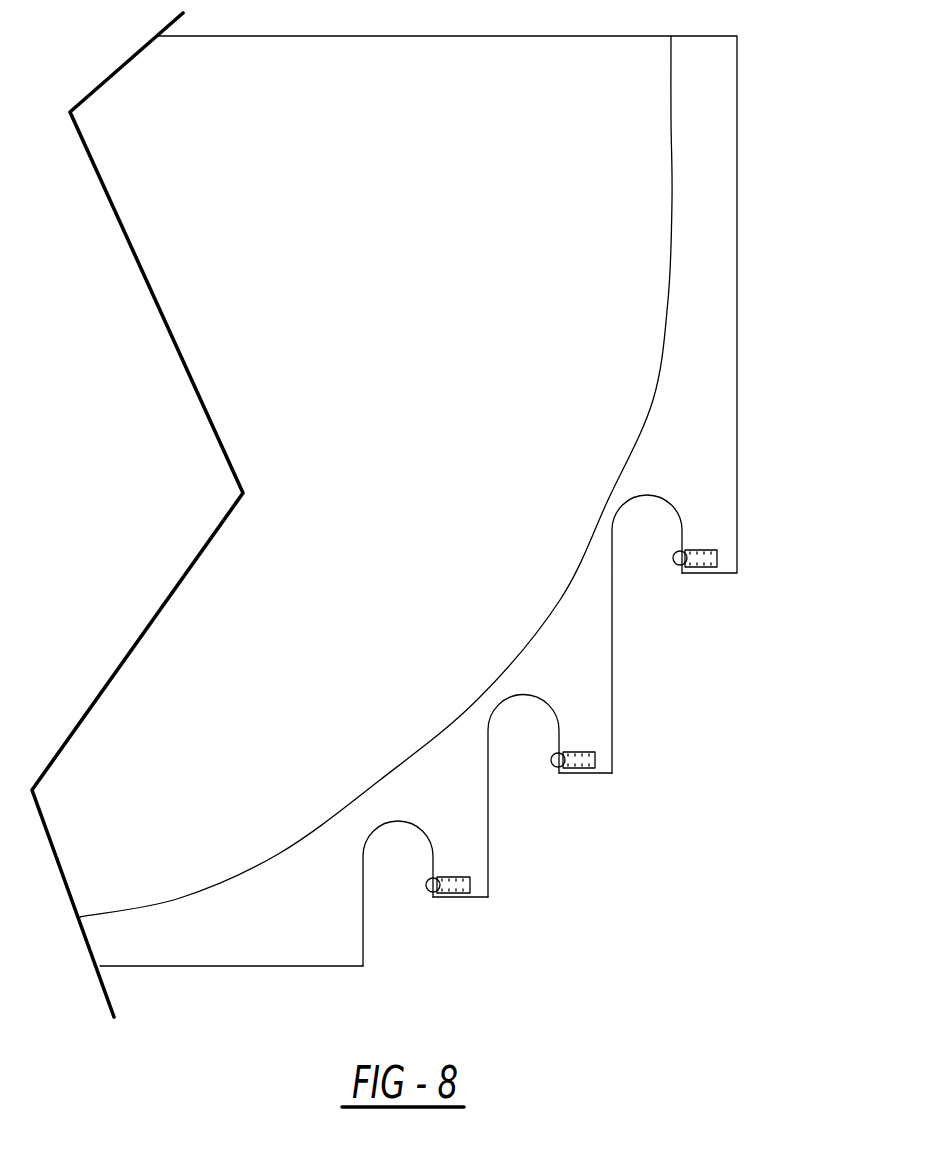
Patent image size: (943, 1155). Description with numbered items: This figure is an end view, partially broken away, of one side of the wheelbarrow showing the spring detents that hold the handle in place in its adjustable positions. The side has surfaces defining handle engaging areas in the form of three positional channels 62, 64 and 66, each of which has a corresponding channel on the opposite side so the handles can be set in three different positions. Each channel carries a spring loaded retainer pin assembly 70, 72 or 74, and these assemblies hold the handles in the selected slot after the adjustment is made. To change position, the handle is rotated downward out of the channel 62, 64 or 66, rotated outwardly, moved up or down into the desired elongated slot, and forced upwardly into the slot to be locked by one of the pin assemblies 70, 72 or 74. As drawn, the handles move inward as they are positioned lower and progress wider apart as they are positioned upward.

The positional channel 62 is at (668, 504).
The positional channel 64 is at (540, 700).
The positional channel 66 is at (407, 823).
The spring loaded retainer pin assembly 70 is at (707, 549).
The spring loaded retainer pin assembly 72 is at (590, 751).
The spring loaded retainer pin assembly 74 is at (458, 893).